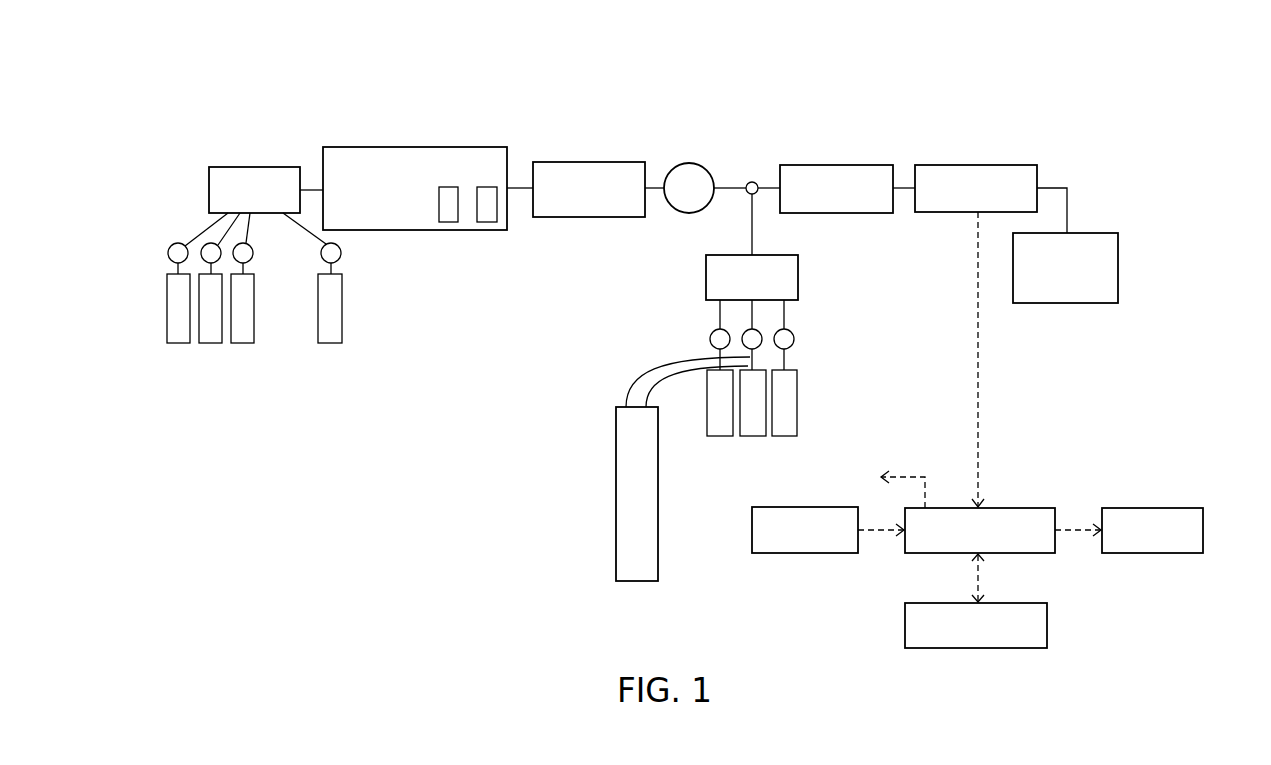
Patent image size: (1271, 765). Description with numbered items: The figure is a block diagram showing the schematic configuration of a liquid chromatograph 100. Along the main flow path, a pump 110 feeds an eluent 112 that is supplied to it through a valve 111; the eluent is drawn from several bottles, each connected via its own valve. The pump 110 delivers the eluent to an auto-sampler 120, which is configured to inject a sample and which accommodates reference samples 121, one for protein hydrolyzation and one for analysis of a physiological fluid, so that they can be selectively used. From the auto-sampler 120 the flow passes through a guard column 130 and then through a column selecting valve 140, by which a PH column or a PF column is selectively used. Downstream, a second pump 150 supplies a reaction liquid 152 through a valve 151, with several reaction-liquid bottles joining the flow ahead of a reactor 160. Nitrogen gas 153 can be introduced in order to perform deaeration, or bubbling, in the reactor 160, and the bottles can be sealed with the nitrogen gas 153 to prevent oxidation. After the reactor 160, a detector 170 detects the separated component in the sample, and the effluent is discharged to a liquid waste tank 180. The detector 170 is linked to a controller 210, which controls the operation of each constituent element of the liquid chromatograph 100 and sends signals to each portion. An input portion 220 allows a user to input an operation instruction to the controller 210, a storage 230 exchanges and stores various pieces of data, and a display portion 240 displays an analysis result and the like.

The liquid chromatograph 100 is at (199, 92).
The pump 110 is at (272, 167).
The valve 111 is at (168, 255).
The eluent 112 is at (167, 307).
The auto-sampler 120 is at (450, 147).
The reference sample 121 is at (448, 222).
The guard column 130 is at (590, 162).
The column selecting valve 140 is at (692, 163).
The pump 150 is at (798, 278).
The valve 151 is at (794, 339).
The reaction liquid 152 is at (797, 402).
The nitrogen gas 153 is at (616, 462).
The reactor 160 is at (845, 165).
The detector 170 is at (975, 165).
The liquid waste tank 180 is at (1102, 233).
The controller 210 is at (1040, 508).
The input portion 220 is at (812, 553).
The storage 230 is at (1047, 624).
The display portion 240 is at (1150, 508).